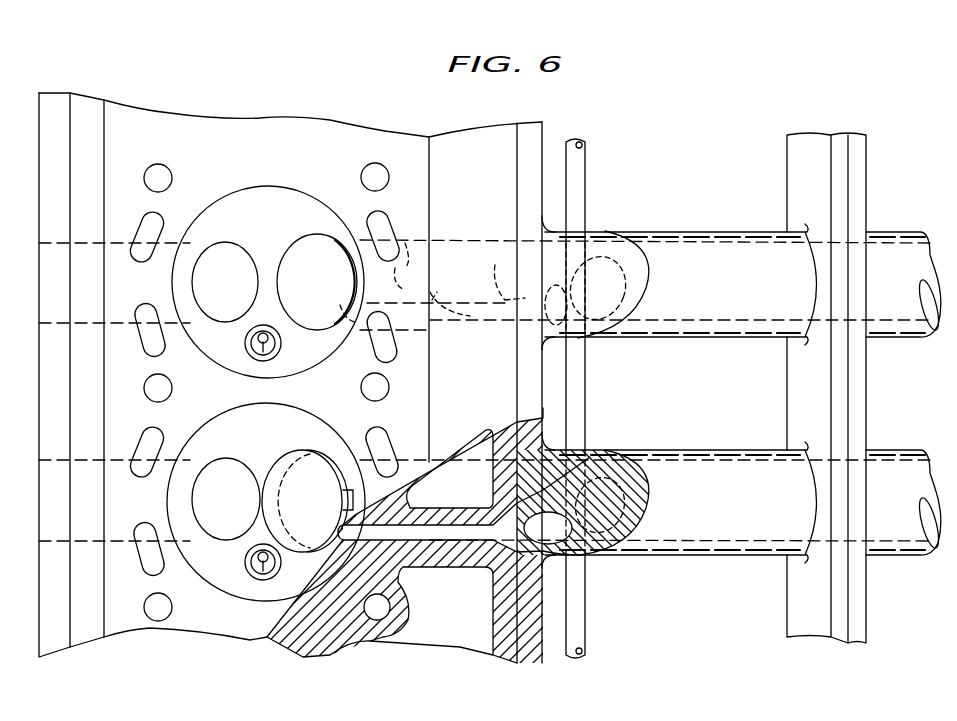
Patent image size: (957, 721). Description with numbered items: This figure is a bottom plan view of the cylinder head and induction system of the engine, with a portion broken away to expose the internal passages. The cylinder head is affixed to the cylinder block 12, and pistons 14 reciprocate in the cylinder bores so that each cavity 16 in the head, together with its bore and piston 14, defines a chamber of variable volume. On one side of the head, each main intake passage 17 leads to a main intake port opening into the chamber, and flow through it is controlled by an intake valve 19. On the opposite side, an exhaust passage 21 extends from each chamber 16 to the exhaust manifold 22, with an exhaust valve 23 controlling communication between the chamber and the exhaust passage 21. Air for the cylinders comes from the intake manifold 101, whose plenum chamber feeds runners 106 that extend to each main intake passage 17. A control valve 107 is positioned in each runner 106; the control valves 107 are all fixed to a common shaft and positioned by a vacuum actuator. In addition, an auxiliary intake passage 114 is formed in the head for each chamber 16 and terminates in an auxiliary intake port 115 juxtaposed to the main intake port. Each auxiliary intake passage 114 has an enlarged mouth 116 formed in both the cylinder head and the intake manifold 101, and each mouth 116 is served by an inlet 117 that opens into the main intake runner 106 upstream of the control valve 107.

The cylinder block 12 is at (703, 232).
The piston 14 is at (418, 458).
The cavity 16 is at (253, 240).
The main intake passage 17 is at (379, 282).
The intake valve 19 is at (305, 297).
The exhaust passage 21 is at (118, 243).
The exhaust manifold 22 is at (620, 270).
The exhaust valve 23 is at (214, 298).
The intake manifold 101 is at (882, 208).
The runner 106 is at (728, 248).
The control valve 107 is at (607, 231).
The auxiliary intake passage 114 is at (428, 507).
The auxiliary intake port 115 is at (403, 527).
The enlarged mouth 116 is at (524, 400).
The inlet 117 is at (640, 497).